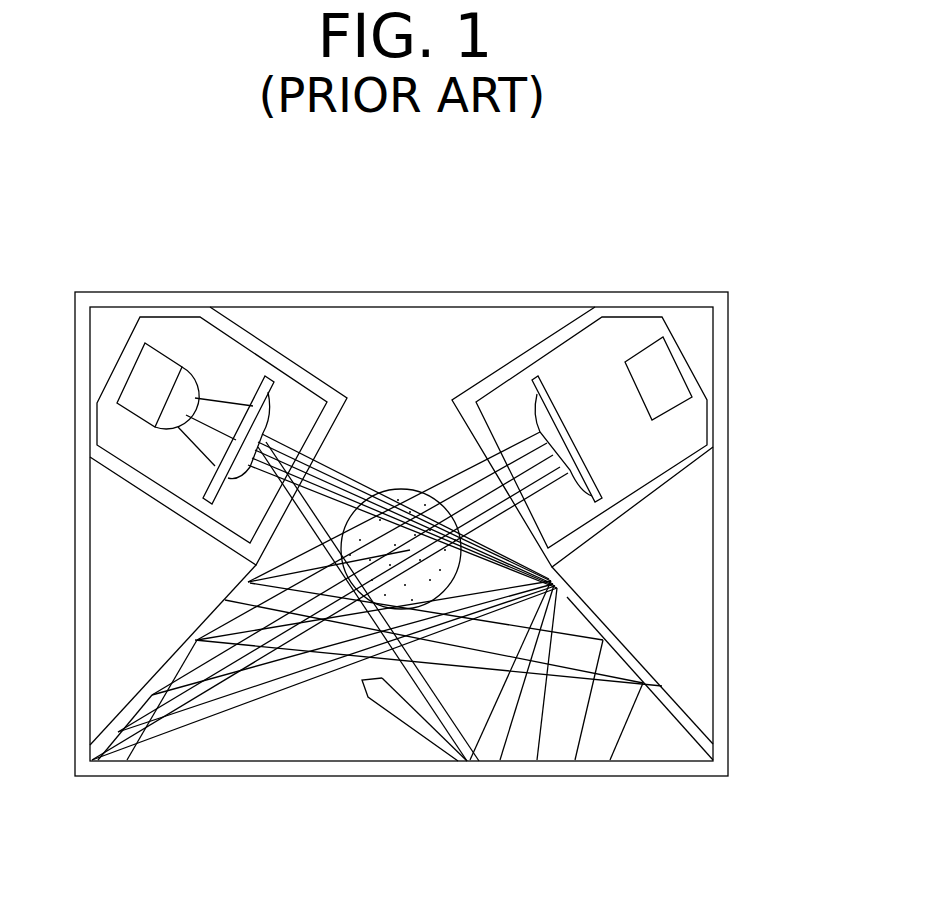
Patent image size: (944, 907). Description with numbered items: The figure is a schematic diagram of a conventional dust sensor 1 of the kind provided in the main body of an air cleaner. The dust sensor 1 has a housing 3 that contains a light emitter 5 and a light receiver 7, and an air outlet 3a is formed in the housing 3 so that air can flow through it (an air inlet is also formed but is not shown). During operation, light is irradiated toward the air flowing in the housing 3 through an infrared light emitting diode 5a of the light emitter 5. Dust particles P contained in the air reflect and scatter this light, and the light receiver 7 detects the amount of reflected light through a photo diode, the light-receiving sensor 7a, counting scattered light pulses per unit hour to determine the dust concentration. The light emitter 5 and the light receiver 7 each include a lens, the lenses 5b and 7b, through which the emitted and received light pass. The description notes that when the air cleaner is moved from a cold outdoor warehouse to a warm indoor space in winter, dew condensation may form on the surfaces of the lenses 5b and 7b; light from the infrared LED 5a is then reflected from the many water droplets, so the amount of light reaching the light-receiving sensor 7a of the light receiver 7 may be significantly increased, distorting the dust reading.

The dust sensor 1 is at (394, 173).
The housing 3 is at (470, 292).
The air outlet 3a is at (458, 556).
The light emitter 5 is at (631, 533).
The infrared light emitting diode (LED) 5a is at (670, 403).
The lens 5b is at (568, 472).
The light receiver 7 is at (218, 465).
The light-receiving sensor 7a is at (158, 362).
The lens 7b is at (253, 400).
The dust particles P is at (393, 478).